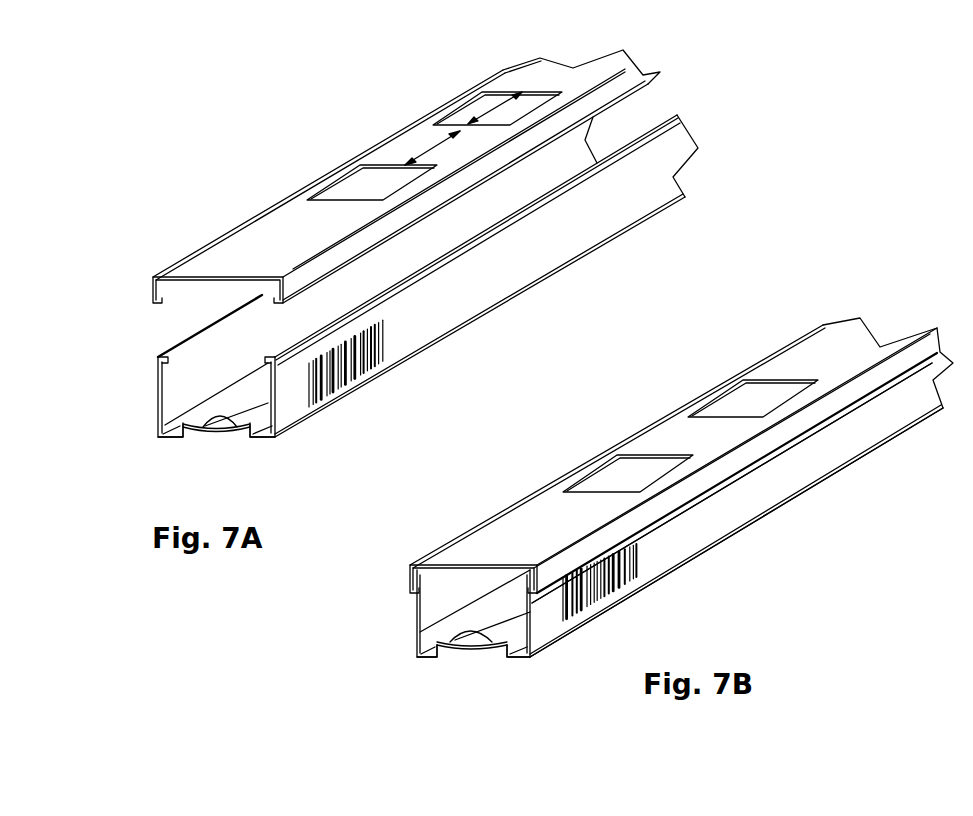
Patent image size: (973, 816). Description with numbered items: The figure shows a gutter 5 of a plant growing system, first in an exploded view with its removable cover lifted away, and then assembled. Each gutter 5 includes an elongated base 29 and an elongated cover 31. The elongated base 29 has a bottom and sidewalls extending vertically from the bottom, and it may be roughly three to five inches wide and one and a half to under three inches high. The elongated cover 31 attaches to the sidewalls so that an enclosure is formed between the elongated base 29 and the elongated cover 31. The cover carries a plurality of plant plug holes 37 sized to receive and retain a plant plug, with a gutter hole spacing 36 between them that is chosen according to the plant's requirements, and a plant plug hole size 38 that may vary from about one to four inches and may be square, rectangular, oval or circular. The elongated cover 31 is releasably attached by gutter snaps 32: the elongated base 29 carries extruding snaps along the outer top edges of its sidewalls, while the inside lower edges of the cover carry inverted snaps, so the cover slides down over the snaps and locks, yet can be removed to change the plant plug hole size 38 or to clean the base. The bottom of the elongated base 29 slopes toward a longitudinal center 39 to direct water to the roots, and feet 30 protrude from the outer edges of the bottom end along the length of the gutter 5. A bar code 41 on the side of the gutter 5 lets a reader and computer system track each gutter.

In FIG. 7B, the gutter 5 is at (822, 462).
In FIG. 7A, the elongated base 29 is at (452, 310).
In FIG. 7B, the elongated base 29 is at (737, 516).
In FIG. 7A, the foot 30 is at (165, 438).
In FIG. 7B, the foot 30 is at (428, 657).
In FIG. 7A, the elongated cover 31 is at (228, 245).
In FIG. 7B, the elongated cover 31 is at (505, 532).
In FIG. 7A, the gutter snap 32 is at (152, 303).
In FIG. 7B, the gutter snap 32 is at (411, 589).
In FIG. 7A, the gutter hole spacing 36 is at (423, 152).
In FIG. 7A, the plant plug hole 37 is at (357, 183).
In FIG. 7A, the plant plug hole size 38 is at (488, 128).
In FIG. 7A, the longitudinal center 39 is at (201, 430).
In FIG. 7B, the longitudinal center 39 is at (458, 641).
In FIG. 7A, the bar code 41 is at (333, 393).
In FIG. 7B, the bar code 41 is at (593, 615).